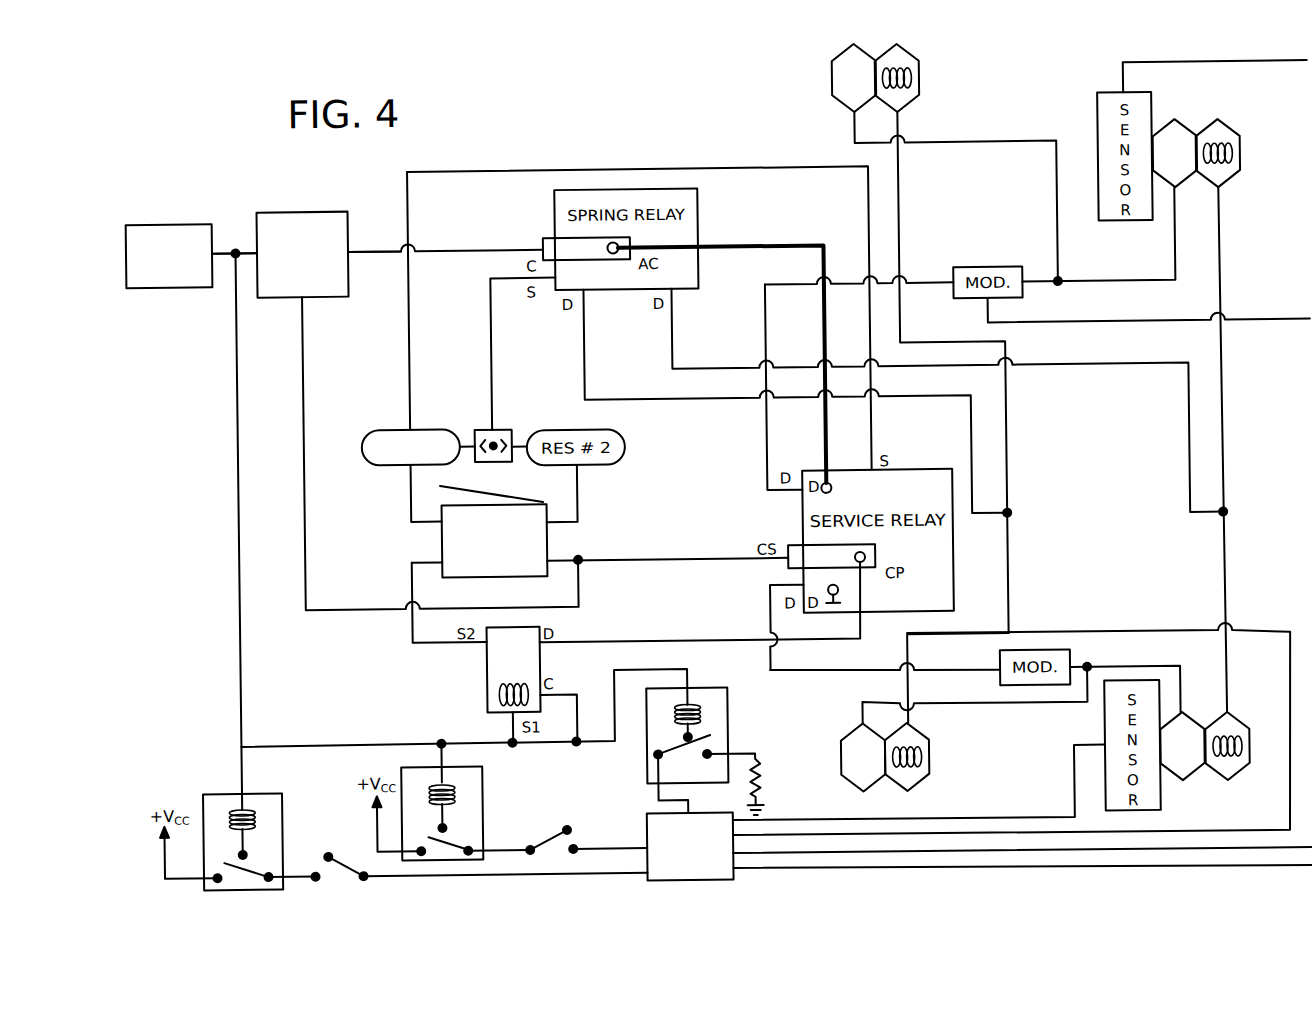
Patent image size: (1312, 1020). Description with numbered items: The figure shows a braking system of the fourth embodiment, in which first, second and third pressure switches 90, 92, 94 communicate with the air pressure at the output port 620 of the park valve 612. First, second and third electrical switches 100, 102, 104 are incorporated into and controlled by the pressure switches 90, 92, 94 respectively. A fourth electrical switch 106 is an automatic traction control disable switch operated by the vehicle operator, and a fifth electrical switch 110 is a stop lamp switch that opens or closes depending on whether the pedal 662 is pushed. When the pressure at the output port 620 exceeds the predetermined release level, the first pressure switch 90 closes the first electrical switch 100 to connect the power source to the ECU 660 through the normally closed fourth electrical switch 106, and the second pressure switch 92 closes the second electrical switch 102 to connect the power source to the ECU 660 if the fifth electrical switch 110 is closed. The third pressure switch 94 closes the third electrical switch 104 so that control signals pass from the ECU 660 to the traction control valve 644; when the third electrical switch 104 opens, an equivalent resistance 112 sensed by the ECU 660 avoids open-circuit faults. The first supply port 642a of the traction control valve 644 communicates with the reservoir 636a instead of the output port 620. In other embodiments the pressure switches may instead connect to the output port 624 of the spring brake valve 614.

The park valve 612 is at (178, 219).
The output port 620 is at (222, 242).
The spring brake valve 614 is at (302, 208).
The output port 624 is at (352, 246).
The reservoir 636a is at (400, 427).
The pedal 662 is at (497, 494).
The traction control valve 644 is at (485, 679).
The first supply port 642a is at (508, 711).
The first pressure switch 90 is at (213, 789).
The first electrical switch 100 is at (246, 866).
The fourth electrical switch 106 is at (345, 840).
The second pressure switch 92 is at (479, 781).
The second electrical switch 102 is at (446, 841).
The fifth electrical switch 110 is at (566, 836).
The ECU 660 is at (650, 813).
The third pressure switch 94 is at (725, 700).
The third electrical switch 104 is at (708, 738).
The equivalent resistance 112 is at (758, 777).